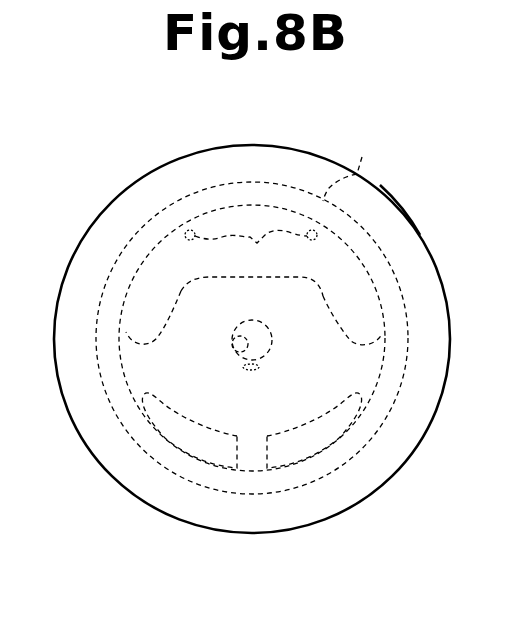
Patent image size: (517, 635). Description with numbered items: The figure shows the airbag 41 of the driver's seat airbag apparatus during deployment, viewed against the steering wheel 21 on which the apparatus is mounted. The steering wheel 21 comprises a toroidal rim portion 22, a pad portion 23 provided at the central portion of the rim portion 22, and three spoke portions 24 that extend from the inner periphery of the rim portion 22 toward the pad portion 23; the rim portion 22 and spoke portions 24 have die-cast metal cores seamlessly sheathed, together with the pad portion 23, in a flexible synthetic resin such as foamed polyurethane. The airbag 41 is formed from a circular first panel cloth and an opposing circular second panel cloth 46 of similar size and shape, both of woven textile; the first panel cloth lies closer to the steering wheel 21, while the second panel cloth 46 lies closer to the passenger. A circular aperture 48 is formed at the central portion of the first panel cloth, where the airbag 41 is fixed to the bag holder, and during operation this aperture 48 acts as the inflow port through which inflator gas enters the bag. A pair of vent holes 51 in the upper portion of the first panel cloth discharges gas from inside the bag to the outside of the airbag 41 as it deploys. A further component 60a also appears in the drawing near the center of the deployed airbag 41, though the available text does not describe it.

The airbag 41 is at (145, 149).
The second panel cloth 46 is at (402, 212).
The rim portion 22 is at (107, 411).
The steering wheel 21 is at (351, 165).
The pad portion 23 is at (318, 299).
The spoke portions 24 is at (292, 446).
The vent holes 51 is at (251, 251).
The aperture 48 is at (233, 346).
The protrusion 60a is at (261, 367).